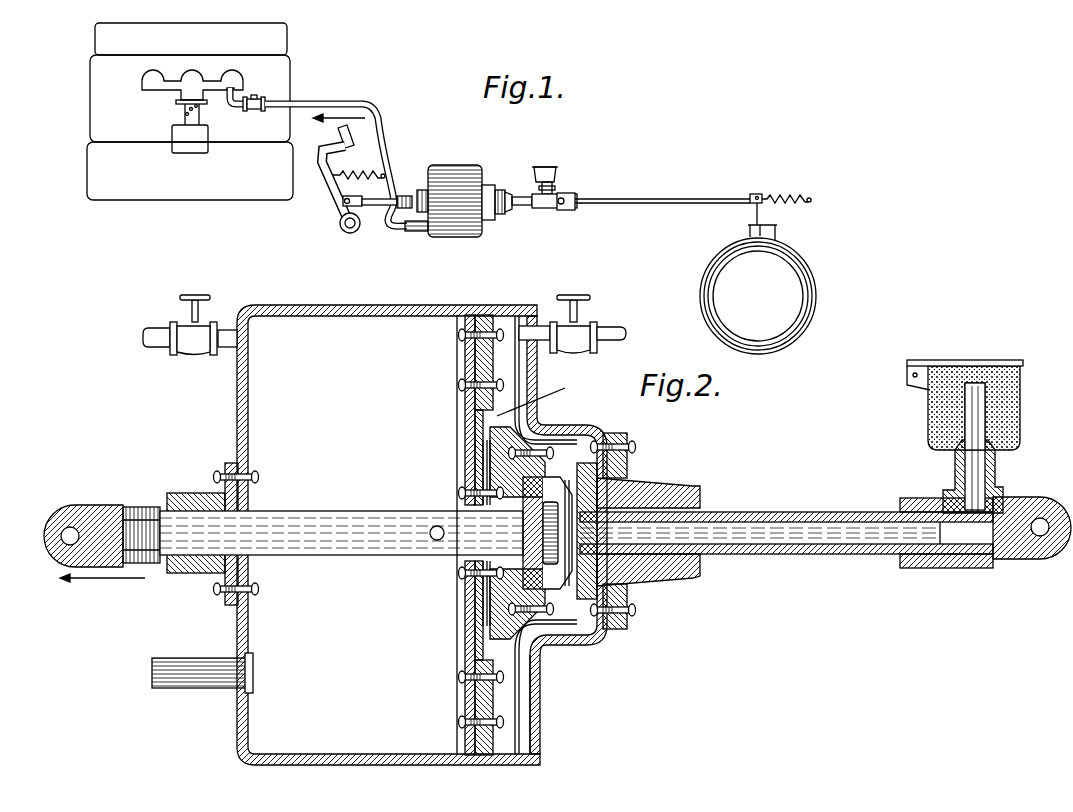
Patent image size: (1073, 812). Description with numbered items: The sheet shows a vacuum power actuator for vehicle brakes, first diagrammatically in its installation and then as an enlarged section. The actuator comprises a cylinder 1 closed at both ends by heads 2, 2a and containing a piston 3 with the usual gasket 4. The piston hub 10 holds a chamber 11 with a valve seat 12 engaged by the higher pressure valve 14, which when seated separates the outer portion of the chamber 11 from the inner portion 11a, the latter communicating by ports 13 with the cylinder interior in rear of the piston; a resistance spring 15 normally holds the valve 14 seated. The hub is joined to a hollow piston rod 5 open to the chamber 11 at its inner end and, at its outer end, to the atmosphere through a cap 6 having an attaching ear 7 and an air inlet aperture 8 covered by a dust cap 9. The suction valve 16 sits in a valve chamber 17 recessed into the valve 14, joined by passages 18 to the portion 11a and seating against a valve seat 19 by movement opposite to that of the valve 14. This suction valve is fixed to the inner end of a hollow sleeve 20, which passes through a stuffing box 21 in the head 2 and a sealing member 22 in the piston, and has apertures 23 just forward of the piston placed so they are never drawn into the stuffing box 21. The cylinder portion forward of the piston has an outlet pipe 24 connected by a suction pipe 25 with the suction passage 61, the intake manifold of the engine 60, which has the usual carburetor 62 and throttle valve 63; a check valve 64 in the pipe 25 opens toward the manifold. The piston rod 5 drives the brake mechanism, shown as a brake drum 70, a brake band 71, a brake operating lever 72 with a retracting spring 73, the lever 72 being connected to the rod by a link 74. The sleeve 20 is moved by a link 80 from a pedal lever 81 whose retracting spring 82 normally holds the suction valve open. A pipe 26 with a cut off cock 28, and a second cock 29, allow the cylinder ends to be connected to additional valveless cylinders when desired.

In FIG. 1, the cylinder 1 is at (449, 172).
In FIG. 2, the head 2 is at (237, 380).
In FIG. 2, the head 2a is at (528, 374).
In FIG. 2, the piston 3 is at (466, 370).
In FIG. 2, the gasket 4 is at (488, 305).
In FIG. 1, the piston rod 5 is at (518, 197).
In FIG. 2, the piston rod 5 is at (784, 512).
In FIG. 1, the cap 6 is at (545, 209).
In FIG. 2, the cap 6 is at (1010, 562).
In FIG. 1, the attaching lug or ear 7 is at (563, 210).
In FIG. 2, the attaching lug or ear 7 is at (1030, 500).
In FIG. 2, the air inlet aperture 8 is at (965, 465).
In FIG. 1, the dust cap 9 is at (555, 173).
In FIG. 2, the dust cap 9 is at (929, 404).
In FIG. 2, the piston hub 10 is at (574, 440).
In FIG. 2, the chamber 11 is at (588, 632).
In FIG. 2, the inner portion of hub chamber 11a is at (476, 428).
In FIG. 2, the valve seat 12 is at (534, 680).
In FIG. 2, the ports or passages 13 is at (540, 718).
In FIG. 2, the higher pressure valve 14 is at (543, 426).
In FIG. 2, the resistance spring 15 is at (483, 452).
In FIG. 2, the suction valve 16 is at (590, 490).
In FIG. 2, the valve chamber 17 is at (603, 618).
In FIG. 2, the passages 18 is at (540, 502).
In FIG. 2, the valve seat 19 is at (565, 578).
In FIG. 2, the valve actuating part 20 is at (333, 558).
In FIG. 2, the stuffing box 21 is at (212, 492).
In FIG. 2, the sealing member 22 is at (555, 560).
In FIG. 2, the apertures 23 is at (470, 512).
In FIG. 1, the outlet pipe 24 is at (424, 232).
In FIG. 2, the outlet pipe 24 is at (190, 660).
In FIG. 1, the suction pipe 25 is at (340, 165).
In FIG. 2, the pipe 26 is at (226, 330).
In FIG. 2, the cut off cock 28 is at (190, 350).
In FIG. 2, the cut off cock 29 is at (582, 348).
In FIG. 1, the internal combustion engine 60 is at (95, 40).
In FIG. 1, the suction passage 61 is at (241, 80).
In FIG. 1, the carburetor 62 is at (188, 151).
In FIG. 1, the throttle valve 63 is at (183, 119).
In FIG. 1, the check valve 64 is at (266, 103).
In FIG. 1, the brake drum 70 is at (713, 292).
In FIG. 1, the brake band 71 is at (700, 293).
In FIG. 1, the brake operating lever 72 is at (751, 212).
In FIG. 1, the retracting spring 73 is at (786, 188).
In FIG. 1, the link 74 is at (657, 199).
In FIG. 1, the link 80 is at (380, 210).
In FIG. 1, the pedal lever 81 is at (332, 192).
In FIG. 1, the retracting spring 82 is at (359, 165).